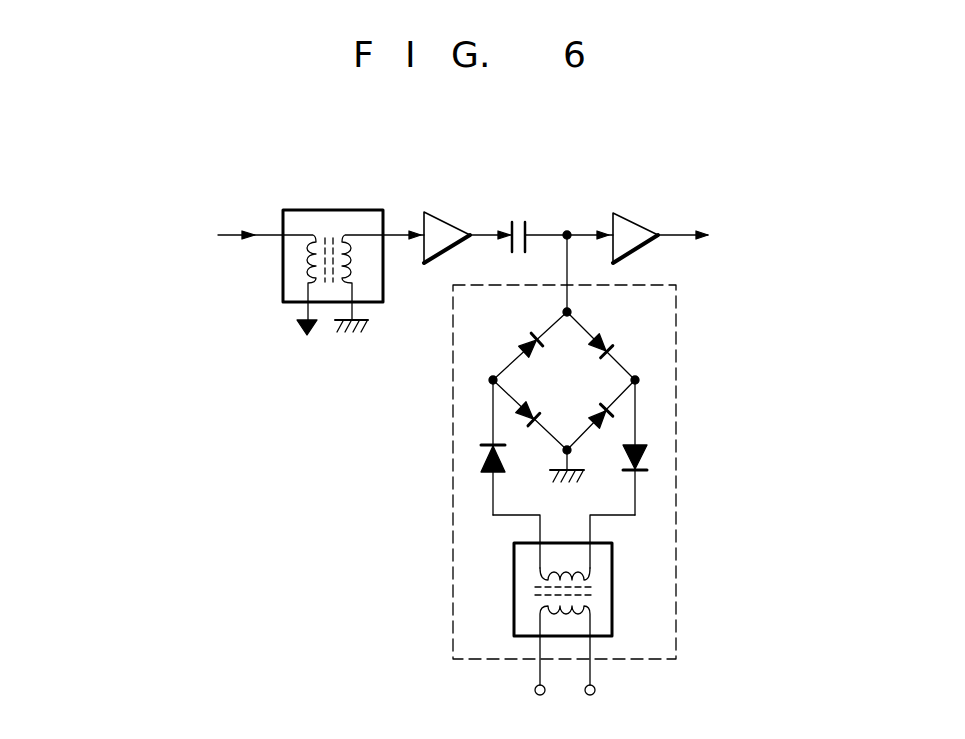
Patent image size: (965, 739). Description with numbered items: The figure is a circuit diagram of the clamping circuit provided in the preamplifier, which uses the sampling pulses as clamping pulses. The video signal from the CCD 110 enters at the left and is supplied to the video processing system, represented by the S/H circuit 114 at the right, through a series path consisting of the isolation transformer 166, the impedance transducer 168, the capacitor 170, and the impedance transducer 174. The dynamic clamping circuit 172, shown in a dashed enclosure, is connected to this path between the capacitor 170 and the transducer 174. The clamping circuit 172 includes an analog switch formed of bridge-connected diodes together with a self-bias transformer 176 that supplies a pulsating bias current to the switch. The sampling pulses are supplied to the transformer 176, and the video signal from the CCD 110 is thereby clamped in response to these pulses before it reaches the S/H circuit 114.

The CCD 110 is at (168, 234).
The S/H circuit 114 is at (800, 240).
The isolation transformer 166 is at (345, 210).
The impedance transducer 168 is at (441, 220).
The capacitor 170 is at (521, 217).
The dynamic clamping circuit 172 is at (676, 352).
The impedance transducer 174 is at (633, 222).
The self-bias transformer 176 is at (612, 570).